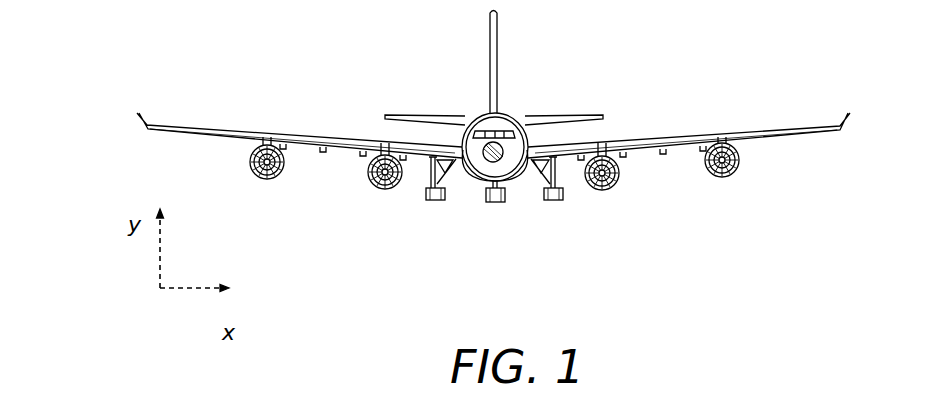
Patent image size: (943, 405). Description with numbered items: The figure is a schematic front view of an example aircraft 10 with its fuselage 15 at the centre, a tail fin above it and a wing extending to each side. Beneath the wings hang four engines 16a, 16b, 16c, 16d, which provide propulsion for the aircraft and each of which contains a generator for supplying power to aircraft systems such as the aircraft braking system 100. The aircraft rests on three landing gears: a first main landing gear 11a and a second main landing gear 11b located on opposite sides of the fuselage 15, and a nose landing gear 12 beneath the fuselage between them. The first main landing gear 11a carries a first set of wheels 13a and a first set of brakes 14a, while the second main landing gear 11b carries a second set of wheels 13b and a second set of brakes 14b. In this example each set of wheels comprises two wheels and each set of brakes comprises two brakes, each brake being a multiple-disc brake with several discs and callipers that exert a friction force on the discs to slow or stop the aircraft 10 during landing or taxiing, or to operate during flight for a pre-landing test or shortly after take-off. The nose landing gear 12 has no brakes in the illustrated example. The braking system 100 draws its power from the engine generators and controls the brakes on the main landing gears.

The aircraft 10 is at (372, 78).
The fuselage 15 is at (508, 111).
The engine 16a is at (249, 153).
The engine 16b is at (368, 168).
The engine 16c is at (618, 178).
The engine 16d is at (723, 177).
The aircraft braking system 100 is at (411, 193).
The first main landing gear 11a is at (432, 219).
The second main landing gear 11b is at (558, 213).
The nose landing gear 12 is at (493, 217).
The first set of wheels 13a is at (448, 206).
The second set of wheels 13b is at (560, 211).
The first set of brakes 14a is at (428, 206).
The second set of brakes 14b is at (545, 203).